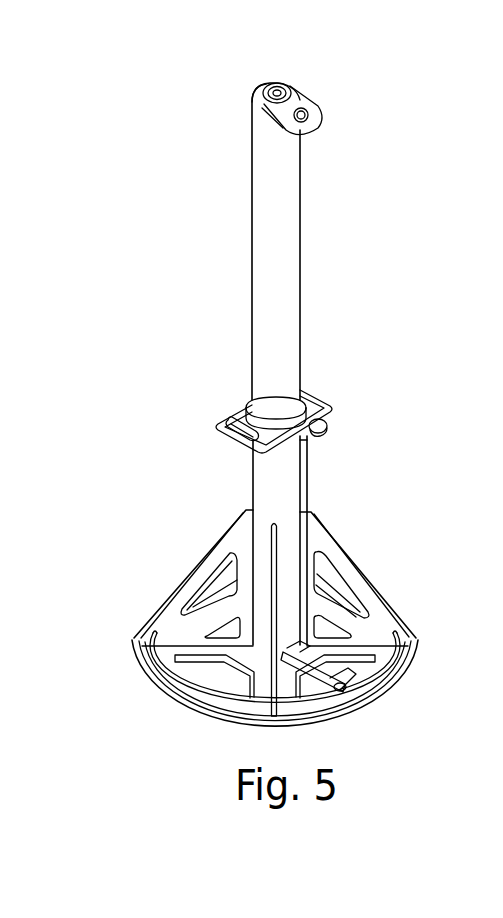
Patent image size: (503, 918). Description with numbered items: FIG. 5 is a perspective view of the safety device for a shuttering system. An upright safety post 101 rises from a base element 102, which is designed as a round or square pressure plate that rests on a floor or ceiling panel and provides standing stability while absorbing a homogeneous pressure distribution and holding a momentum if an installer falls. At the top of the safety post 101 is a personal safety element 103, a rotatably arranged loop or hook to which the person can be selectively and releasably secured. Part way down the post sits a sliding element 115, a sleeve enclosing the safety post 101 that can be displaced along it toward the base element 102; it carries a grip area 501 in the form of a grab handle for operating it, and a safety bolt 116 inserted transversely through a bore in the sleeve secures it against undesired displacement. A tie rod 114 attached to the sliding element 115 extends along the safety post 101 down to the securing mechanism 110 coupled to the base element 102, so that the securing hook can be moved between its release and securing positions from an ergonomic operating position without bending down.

The safety post 101 is at (282, 230).
The personal safety element 103 is at (302, 94).
The grip area 501 is at (333, 405).
The sliding element 115 is at (272, 418).
The safety bolt 116 is at (320, 428).
The tie rod 114 is at (307, 493).
The securing mechanism 110 is at (332, 660).
The base element 102 is at (168, 707).